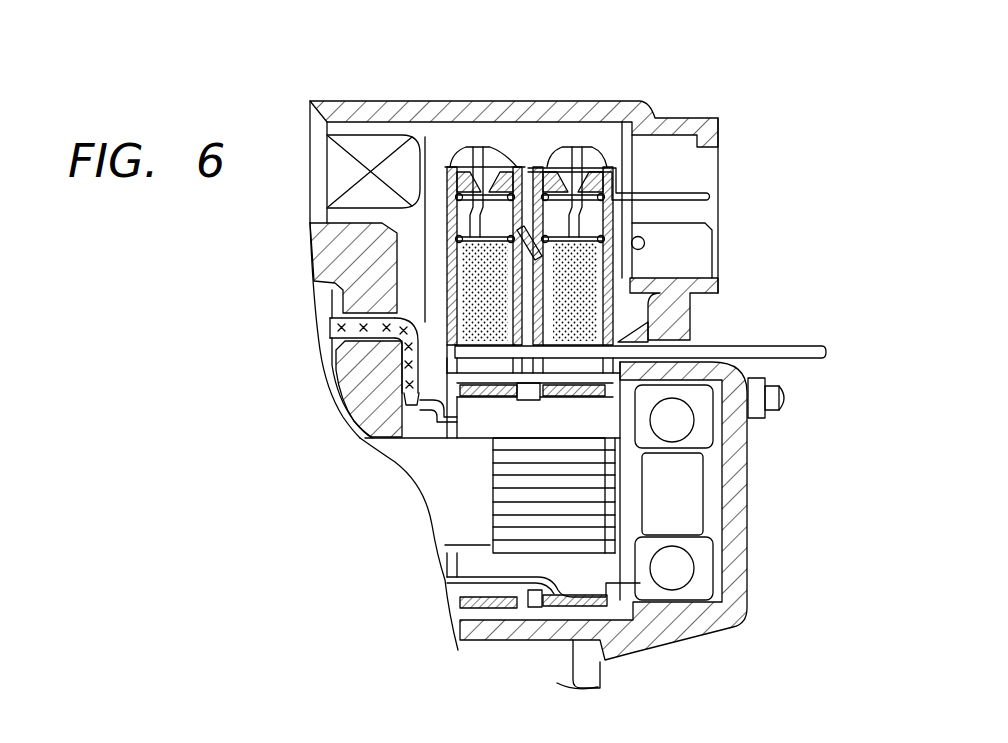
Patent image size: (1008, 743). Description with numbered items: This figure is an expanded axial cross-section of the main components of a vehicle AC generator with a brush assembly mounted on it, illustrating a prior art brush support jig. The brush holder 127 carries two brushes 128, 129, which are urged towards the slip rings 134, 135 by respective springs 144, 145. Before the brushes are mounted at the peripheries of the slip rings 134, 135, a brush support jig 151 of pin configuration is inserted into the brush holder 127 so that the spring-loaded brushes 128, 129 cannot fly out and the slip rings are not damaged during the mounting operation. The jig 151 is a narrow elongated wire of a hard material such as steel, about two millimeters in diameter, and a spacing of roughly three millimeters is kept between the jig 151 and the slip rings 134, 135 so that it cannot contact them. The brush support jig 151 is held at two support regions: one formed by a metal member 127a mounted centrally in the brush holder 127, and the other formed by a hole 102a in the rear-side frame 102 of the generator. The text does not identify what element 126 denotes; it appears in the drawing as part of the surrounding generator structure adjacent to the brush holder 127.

The housing cover 126 is at (686, 102).
The spring 144 is at (457, 170).
The spring 145 is at (673, 200).
The brush holder 127 is at (612, 178).
The metal member 127a is at (645, 243).
The brush 129 is at (588, 282).
The hole 102a is at (620, 342).
The brush support jig 151 is at (772, 346).
The brush 128 is at (365, 263).
The slip ring 134 is at (468, 607).
The slip ring 135 is at (577, 604).
The rear-side frame 102 is at (600, 661).